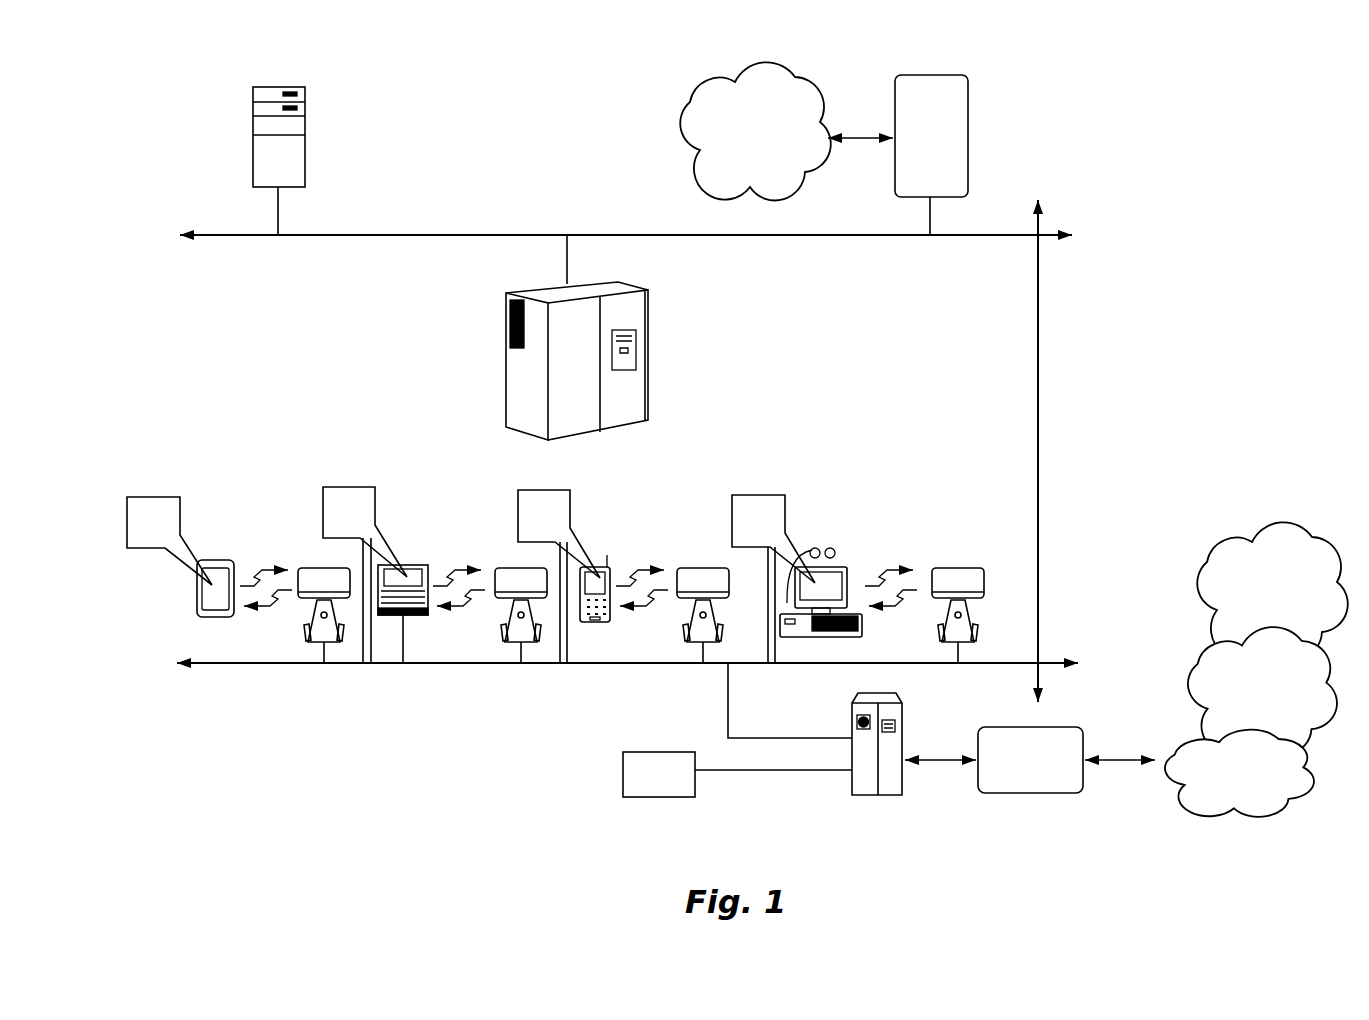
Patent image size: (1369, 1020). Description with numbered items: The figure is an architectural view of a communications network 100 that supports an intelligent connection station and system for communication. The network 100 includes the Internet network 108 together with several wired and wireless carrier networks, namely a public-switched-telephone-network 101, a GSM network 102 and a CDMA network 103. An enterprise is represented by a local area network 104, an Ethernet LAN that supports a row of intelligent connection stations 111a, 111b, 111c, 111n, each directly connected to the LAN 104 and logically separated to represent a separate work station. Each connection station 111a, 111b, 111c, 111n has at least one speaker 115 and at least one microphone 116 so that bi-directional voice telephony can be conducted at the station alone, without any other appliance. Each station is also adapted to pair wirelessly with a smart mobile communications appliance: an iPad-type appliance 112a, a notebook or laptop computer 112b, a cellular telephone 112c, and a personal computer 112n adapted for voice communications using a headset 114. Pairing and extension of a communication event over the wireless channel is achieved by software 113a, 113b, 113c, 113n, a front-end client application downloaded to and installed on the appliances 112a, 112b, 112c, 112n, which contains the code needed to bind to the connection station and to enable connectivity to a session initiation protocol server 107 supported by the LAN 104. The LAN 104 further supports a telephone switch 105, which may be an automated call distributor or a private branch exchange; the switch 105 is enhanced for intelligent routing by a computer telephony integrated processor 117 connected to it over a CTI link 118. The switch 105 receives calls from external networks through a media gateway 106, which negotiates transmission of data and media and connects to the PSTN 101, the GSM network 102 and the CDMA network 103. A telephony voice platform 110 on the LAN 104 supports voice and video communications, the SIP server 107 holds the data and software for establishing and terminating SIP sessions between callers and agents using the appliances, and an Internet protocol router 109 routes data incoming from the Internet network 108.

The communications network 100 is at (1182, 332).
The public-switched-telephone-network (PSTN) 101 is at (1228, 797).
The Global System for Mobile Access (GSM) network 102 is at (1195, 690).
The Code-Division Multiple Access (CDMA) network 103 is at (1212, 578).
The local area network (LAN) 104 is at (438, 663).
The telephone switch 105 is at (905, 740).
The media gateway 106 is at (1048, 727).
The session initiation protocol (SIP) server 107 is at (253, 158).
The Internet network 108 is at (680, 133).
The Internet protocol router 109 is at (968, 140).
The telephony voice platform 110 is at (650, 343).
The intelligent connection station 111a is at (323, 567).
The intelligent connection station 111b is at (520, 567).
The intelligent connection station 111c is at (703, 567).
The intelligent connection station 111n is at (956, 568).
The communications appliance 112a is at (197, 580).
The communications appliance 112b is at (413, 617).
The communications appliance 112c is at (598, 622).
The communications appliance 112n is at (833, 637).
The software 113a is at (127, 518).
The software 113b is at (348, 487).
The software 113c is at (605, 508).
The software 113n is at (785, 518).
The headset 114 is at (823, 546).
The speaker 115 is at (305, 630).
The microphone 116 is at (715, 615).
The computer telephony integrated (CTI) processor 117 is at (680, 797).
The CTI link 118 is at (808, 770).